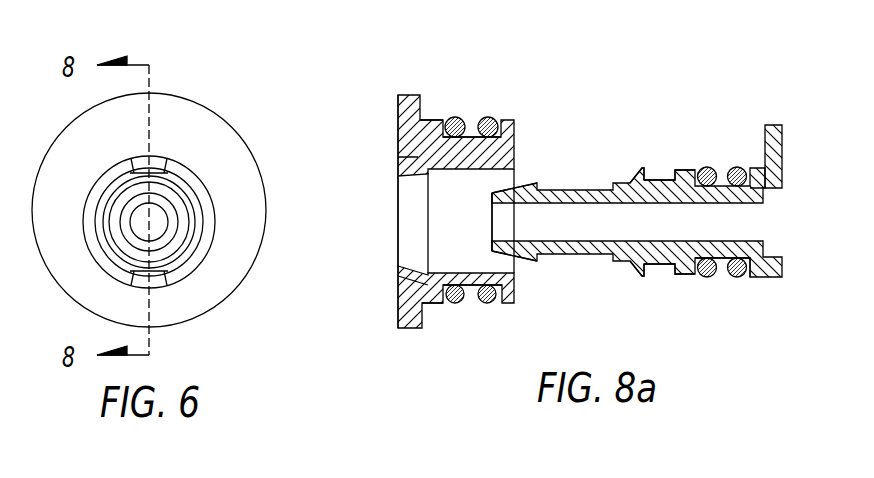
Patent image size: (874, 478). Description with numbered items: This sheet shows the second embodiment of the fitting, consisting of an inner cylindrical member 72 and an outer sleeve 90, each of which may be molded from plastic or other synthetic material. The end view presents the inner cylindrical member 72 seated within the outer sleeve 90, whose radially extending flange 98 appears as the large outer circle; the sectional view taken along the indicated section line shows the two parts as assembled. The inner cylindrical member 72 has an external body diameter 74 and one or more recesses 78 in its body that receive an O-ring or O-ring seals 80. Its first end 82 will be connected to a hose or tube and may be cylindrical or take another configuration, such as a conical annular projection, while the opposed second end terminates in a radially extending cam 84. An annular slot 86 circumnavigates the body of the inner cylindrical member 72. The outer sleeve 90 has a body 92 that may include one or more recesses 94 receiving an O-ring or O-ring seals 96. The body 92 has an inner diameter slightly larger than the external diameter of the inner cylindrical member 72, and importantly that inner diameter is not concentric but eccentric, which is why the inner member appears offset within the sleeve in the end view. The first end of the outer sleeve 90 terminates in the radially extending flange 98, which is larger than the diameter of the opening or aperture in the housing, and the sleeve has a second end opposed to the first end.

In FIG. 6, the inner cylindrical member 72 is at (160, 203).
In FIG. 8a, the inner cylindrical member 72 is at (591, 221).
In FIG. 8a, the external body diameter 74 is at (682, 172).
In FIG. 8a, the recess 78 is at (720, 275).
In FIG. 8a, the O-ring seal 80 is at (708, 170).
In FIG. 8a, the first end 82 is at (492, 220).
In FIG. 8a, the radially extending cam 84 is at (778, 142).
In FIG. 8a, the annular slot 86 is at (652, 168).
In FIG. 6, the outer sleeve 90 is at (243, 220).
In FIG. 8a, the outer sleeve 90 is at (362, 318).
In FIG. 8a, the body 92 is at (426, 130).
In FIG. 8a, the recess 94 is at (472, 120).
In FIG. 8a, the O-ring seal 96 is at (493, 120).
In FIG. 8a, the radially extending flange 98 is at (412, 102).